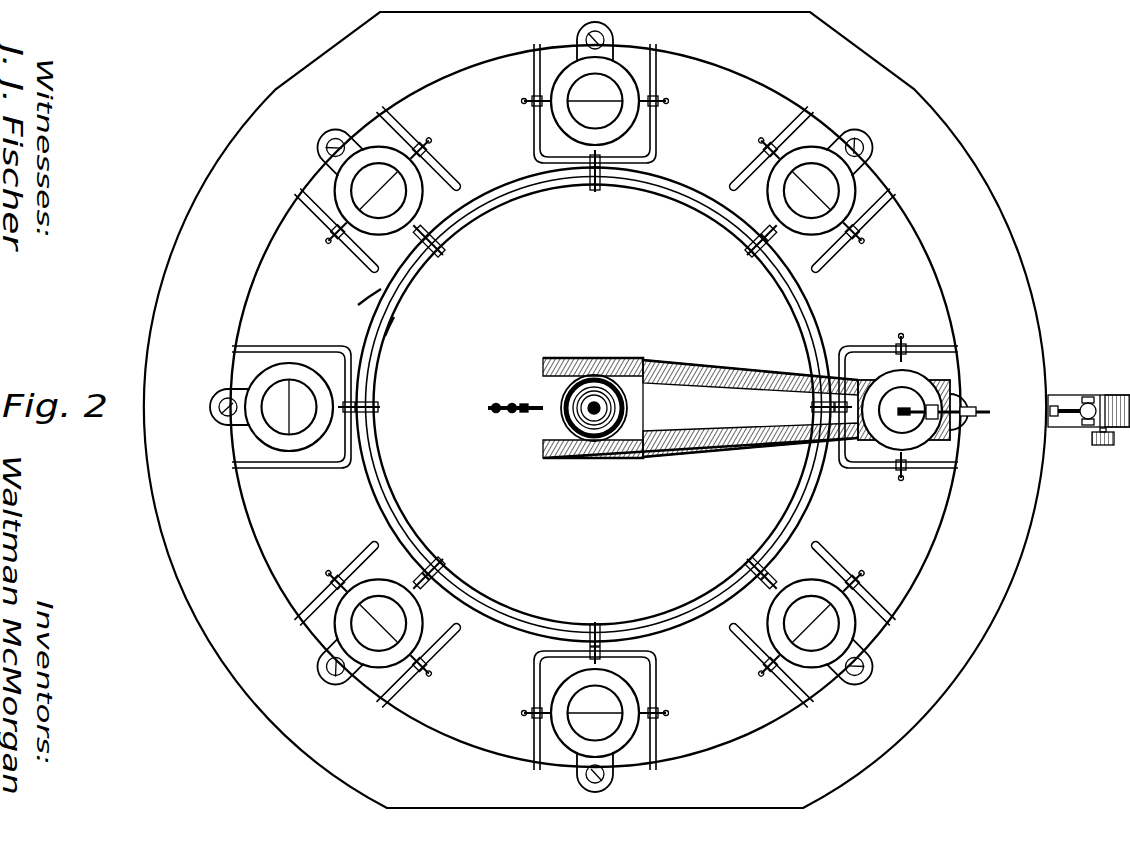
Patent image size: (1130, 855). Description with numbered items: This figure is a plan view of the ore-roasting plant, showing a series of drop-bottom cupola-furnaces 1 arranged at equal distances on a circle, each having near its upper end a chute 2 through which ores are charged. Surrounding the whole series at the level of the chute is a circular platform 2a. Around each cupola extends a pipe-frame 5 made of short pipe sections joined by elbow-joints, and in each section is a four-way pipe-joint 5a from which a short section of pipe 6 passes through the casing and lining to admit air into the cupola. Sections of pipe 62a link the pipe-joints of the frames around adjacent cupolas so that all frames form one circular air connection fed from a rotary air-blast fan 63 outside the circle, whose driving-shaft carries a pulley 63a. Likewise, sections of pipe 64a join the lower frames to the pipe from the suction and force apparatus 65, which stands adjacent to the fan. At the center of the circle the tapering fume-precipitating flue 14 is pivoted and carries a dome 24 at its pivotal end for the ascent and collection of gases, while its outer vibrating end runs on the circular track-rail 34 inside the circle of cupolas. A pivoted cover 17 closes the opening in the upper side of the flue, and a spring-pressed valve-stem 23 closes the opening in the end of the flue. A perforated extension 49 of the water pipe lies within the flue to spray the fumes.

The drop-bottom cupola-furnace 1 is at (559, 407).
The chute 2 is at (332, 140).
The circular platform 2a is at (595, 410).
The pipe-frame 5 is at (338, 346).
The four-way pipe-joint 5a is at (428, 150).
The short section of pipe 6 is at (296, 358).
The fume-precipitating flue 14 is at (746, 408).
The cover 17 is at (902, 410).
The valve-stem 23 is at (990, 412).
The dome 24 is at (623, 408).
The circular track-rail 34 is at (389, 311).
The perforated extension 49 is at (532, 412).
The section of pipe 62a is at (373, 300).
The rotary air-blast fan 63 is at (1118, 394).
The pulley 63a is at (1102, 445).
The sections of pipe 64a is at (388, 336).
The suction and force apparatus 65 is at (1072, 384).